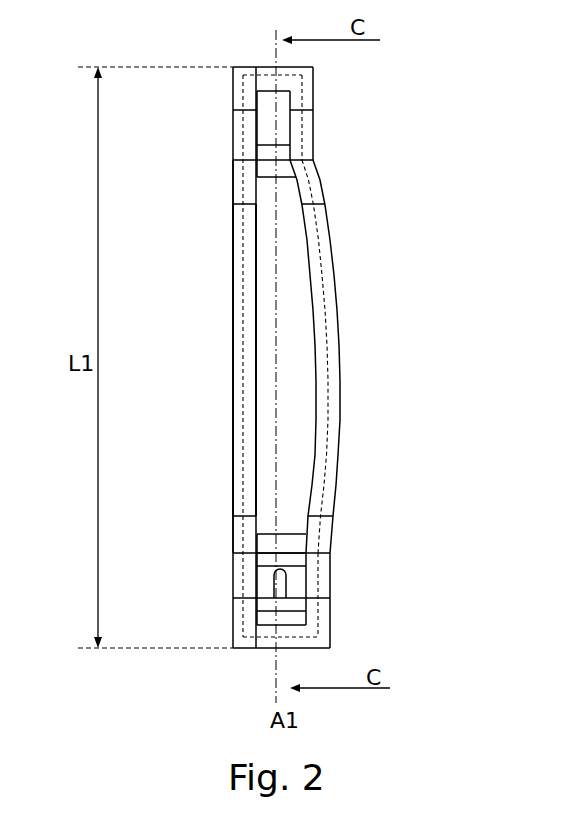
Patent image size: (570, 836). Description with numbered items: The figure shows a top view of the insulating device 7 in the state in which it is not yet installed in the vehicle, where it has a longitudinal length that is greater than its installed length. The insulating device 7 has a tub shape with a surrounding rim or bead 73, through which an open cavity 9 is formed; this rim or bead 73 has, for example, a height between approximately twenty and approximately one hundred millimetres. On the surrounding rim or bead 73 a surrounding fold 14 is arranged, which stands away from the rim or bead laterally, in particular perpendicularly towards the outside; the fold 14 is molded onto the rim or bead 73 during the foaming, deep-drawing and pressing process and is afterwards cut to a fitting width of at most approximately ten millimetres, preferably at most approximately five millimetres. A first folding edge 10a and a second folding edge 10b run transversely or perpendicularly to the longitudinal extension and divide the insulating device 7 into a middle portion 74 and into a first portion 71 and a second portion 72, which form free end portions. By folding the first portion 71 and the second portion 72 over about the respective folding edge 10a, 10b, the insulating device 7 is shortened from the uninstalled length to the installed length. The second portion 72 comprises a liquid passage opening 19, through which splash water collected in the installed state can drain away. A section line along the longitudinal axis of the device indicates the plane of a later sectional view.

The insulating device 7 is at (466, 71).
The open cavity 9 is at (300, 342).
The first folding edge 10a is at (265, 147).
The second folding edge 10b is at (263, 550).
The fold 14 is at (243, 393).
The liquid passage opening 19 is at (275, 610).
The first portion 71 is at (313, 67).
The second portion 72 is at (330, 648).
The surrounding rim or bead 73 is at (311, 243).
The middle portion 74 is at (432, 170).